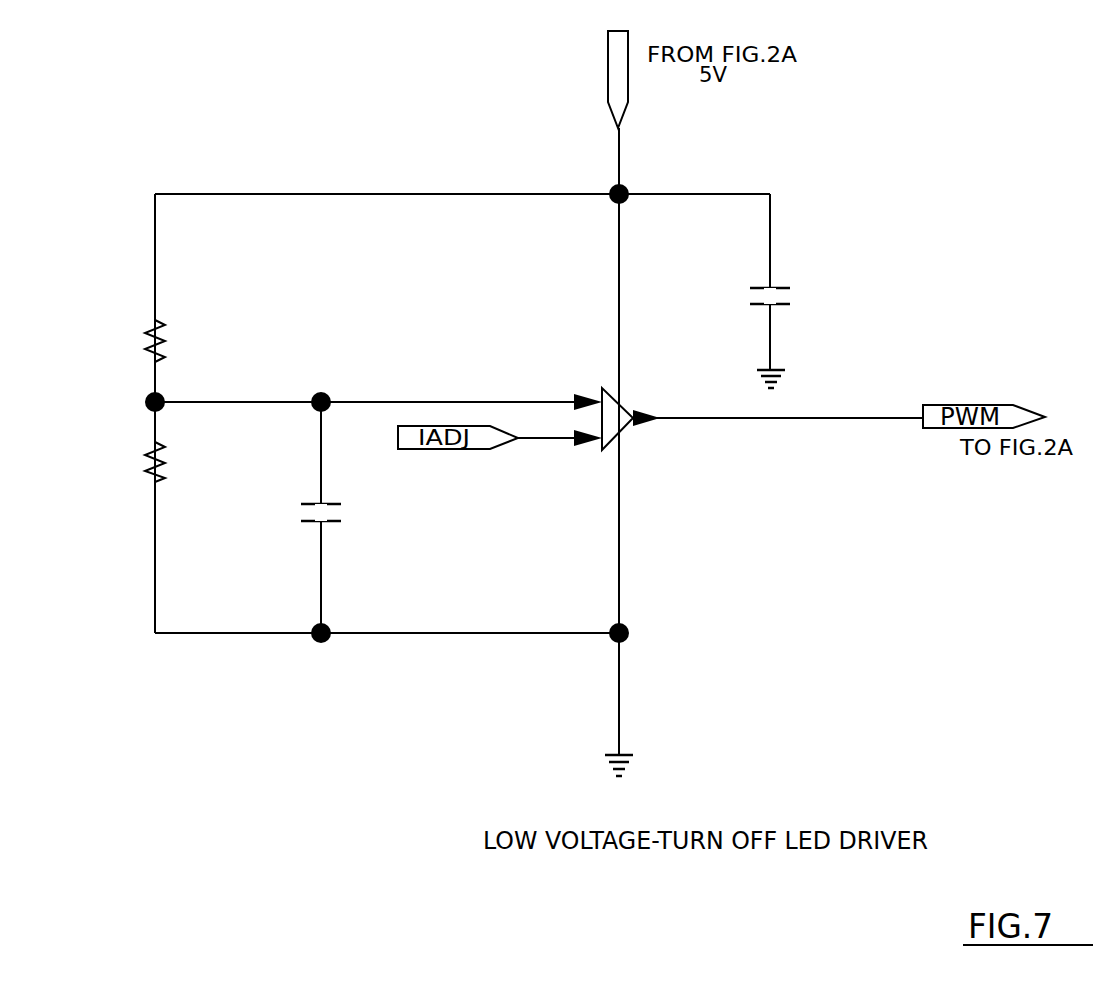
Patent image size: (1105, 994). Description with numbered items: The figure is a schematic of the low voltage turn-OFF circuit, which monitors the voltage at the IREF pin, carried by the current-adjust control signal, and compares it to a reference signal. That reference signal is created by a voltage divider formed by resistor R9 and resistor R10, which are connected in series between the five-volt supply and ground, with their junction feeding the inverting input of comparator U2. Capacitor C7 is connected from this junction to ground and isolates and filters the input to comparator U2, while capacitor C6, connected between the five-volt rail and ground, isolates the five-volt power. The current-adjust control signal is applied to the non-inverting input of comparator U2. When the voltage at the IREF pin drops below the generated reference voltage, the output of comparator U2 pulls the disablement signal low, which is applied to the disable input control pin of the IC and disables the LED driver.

The resistor of voltage divider R9 is at (137, 341).
The resistor of voltage divider R10 is at (136, 462).
The capacitor C6 is at (785, 309).
The capacitor C7 is at (335, 524).
The comparator U2 is at (628, 405).